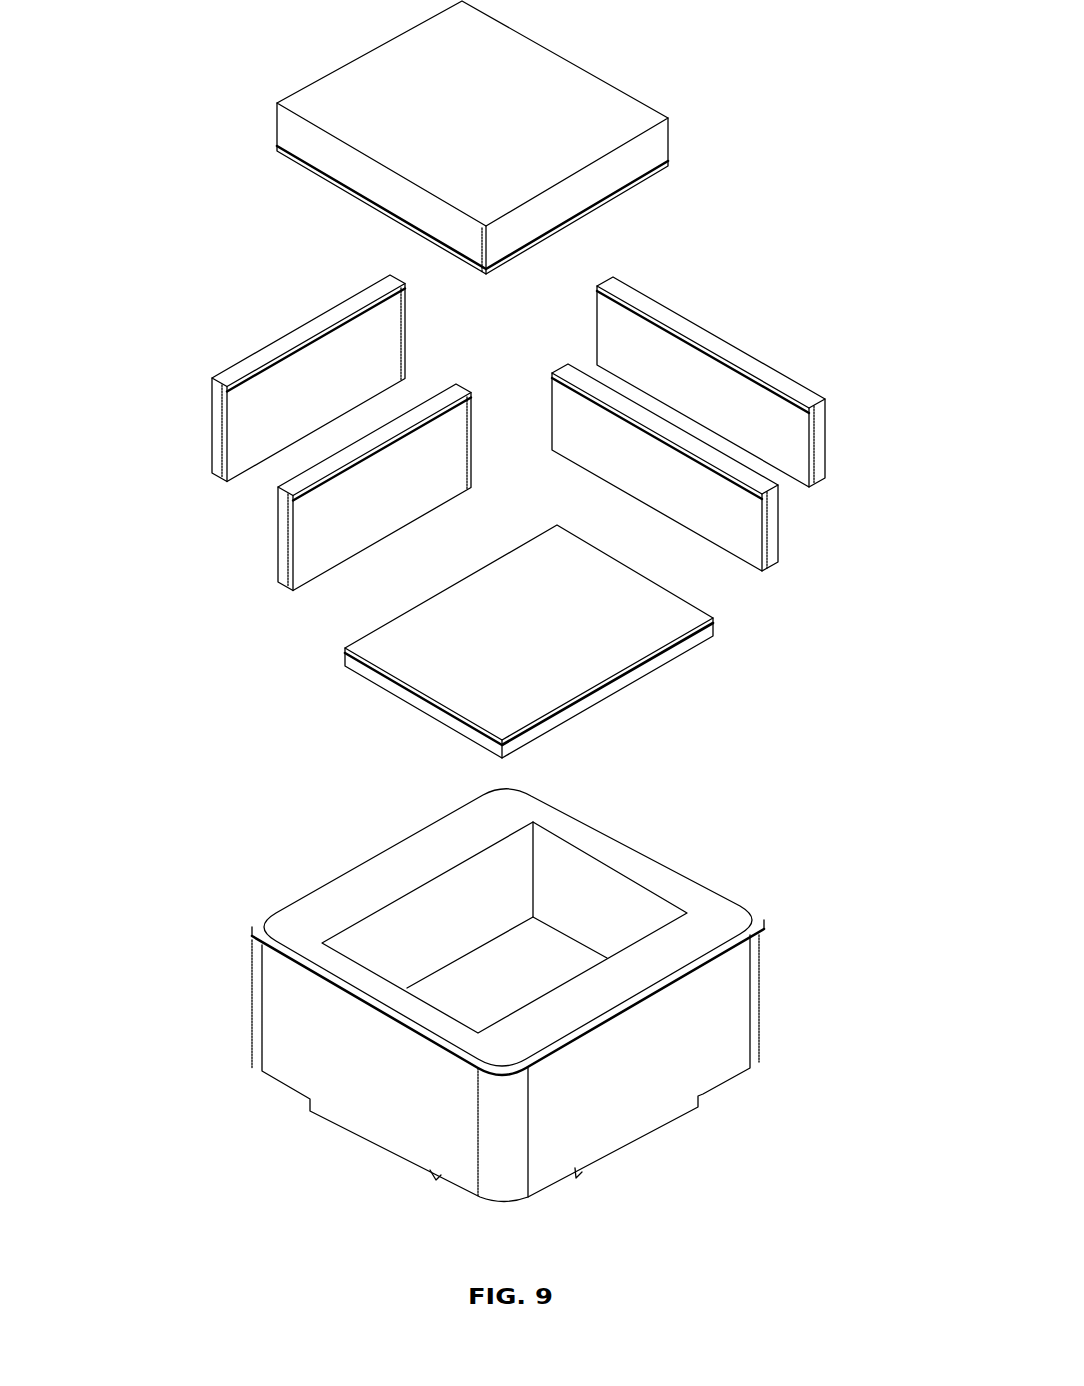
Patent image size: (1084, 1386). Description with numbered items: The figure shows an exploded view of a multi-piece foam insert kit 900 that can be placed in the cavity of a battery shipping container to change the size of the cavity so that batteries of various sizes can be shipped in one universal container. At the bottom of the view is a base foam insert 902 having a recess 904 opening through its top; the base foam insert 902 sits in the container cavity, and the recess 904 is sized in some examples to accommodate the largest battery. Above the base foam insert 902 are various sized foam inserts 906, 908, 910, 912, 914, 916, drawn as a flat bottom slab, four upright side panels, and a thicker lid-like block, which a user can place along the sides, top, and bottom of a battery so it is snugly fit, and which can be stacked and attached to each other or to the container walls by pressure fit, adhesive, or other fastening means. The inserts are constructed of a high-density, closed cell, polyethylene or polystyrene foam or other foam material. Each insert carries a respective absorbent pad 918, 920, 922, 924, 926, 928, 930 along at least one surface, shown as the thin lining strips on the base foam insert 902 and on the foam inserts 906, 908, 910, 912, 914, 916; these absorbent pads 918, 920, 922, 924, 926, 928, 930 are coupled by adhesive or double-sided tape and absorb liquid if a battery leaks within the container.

The multi-piece foam insert kit 900 is at (126, 157).
The base foam insert 902 is at (282, 1035).
The recess 904 is at (422, 900).
The foam insert 906 is at (400, 690).
The foam insert 908 is at (775, 537).
The foam insert 910 is at (817, 438).
The foam insert 912 is at (283, 522).
The foam insert 914 is at (212, 398).
The foam insert 916 is at (290, 133).
The absorbent pad 918 is at (275, 950).
The absorbent pad 920 is at (345, 653).
The absorbent pad 922 is at (765, 553).
The absorbent pad 924 is at (808, 460).
The absorbent pad 926 is at (292, 560).
The absorbent pad 928 is at (230, 462).
The absorbent pad 930 is at (322, 180).